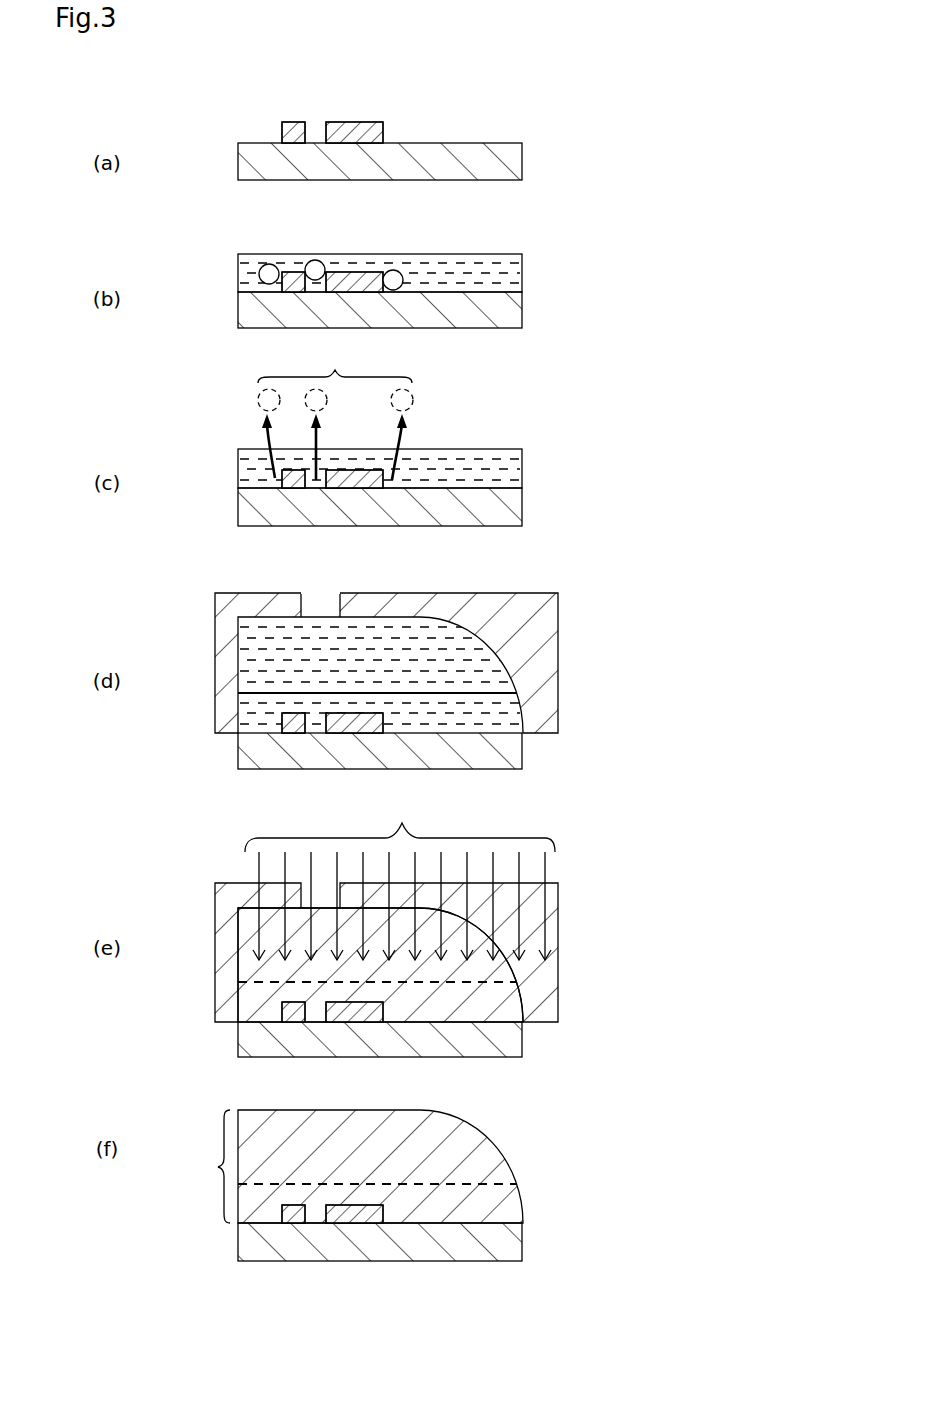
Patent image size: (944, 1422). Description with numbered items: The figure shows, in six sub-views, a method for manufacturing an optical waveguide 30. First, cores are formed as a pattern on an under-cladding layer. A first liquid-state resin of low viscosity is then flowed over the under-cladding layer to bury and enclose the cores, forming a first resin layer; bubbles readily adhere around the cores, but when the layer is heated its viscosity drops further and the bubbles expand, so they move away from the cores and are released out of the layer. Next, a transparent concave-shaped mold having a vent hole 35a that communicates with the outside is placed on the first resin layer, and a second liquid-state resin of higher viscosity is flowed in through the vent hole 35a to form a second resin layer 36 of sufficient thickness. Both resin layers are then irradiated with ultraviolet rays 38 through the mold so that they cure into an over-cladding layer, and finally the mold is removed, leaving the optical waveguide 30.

The optical waveguide 30 is at (540, 1151).
The vent hole 35a is at (318, 605).
The second resin layer 36 is at (490, 686).
The ultraviolet rays 38 is at (400, 877).